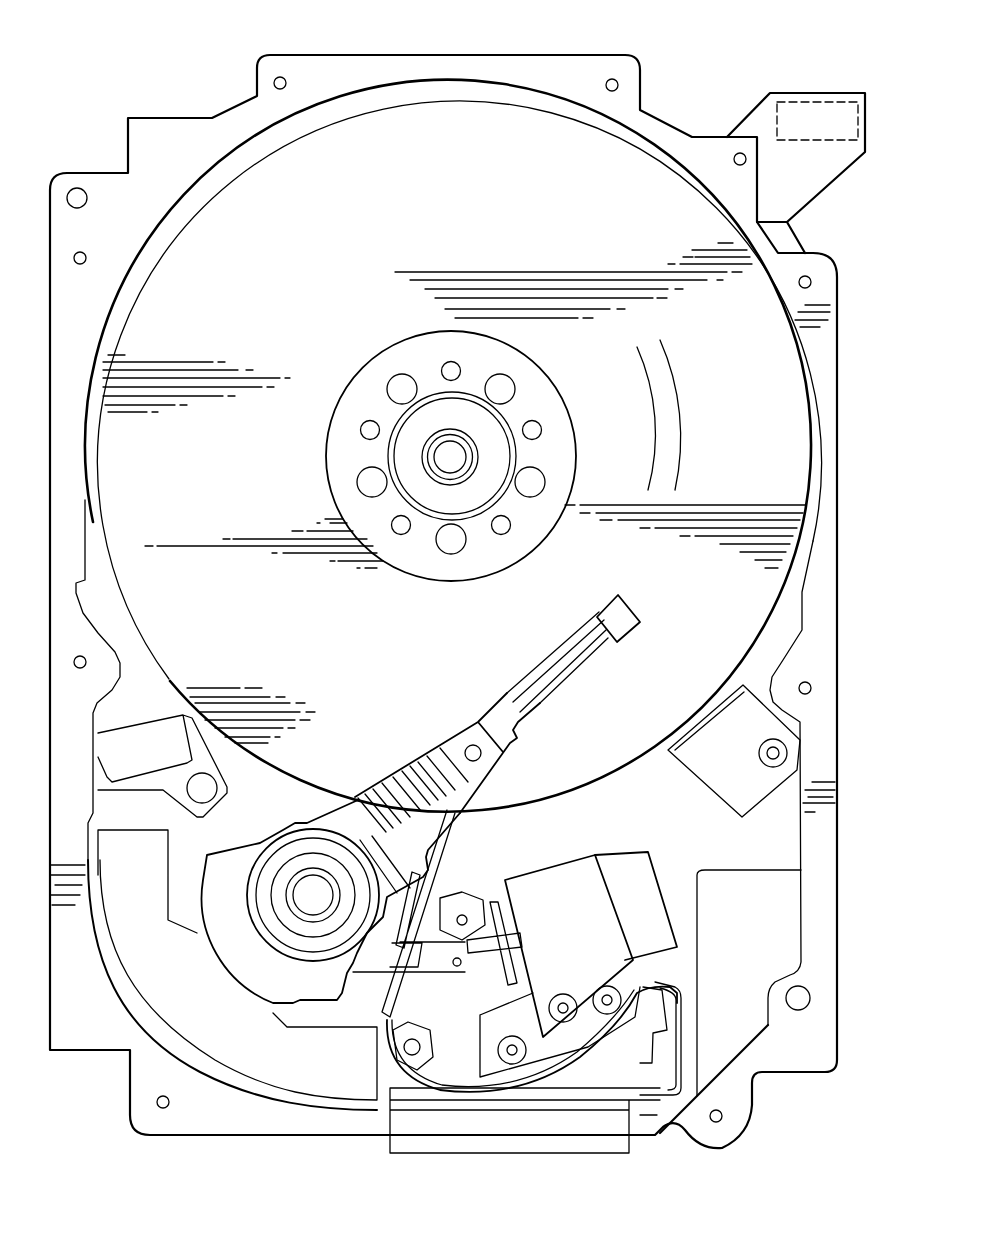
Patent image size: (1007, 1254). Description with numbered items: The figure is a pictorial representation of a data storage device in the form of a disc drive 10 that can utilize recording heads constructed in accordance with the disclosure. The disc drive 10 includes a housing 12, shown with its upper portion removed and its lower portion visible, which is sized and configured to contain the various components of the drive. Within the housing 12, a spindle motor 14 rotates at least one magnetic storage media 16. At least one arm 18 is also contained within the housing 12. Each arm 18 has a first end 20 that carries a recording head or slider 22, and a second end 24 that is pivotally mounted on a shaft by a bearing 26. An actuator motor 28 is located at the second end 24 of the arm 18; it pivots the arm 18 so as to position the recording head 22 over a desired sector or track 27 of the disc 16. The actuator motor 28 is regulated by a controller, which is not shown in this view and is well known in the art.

The disc drive 10 is at (108, 108).
The housing 12 is at (590, 65).
The spindle motor 14 is at (447, 462).
The magnetic storage media 16 is at (333, 238).
The arm 18 is at (435, 765).
The first end 20 is at (560, 648).
The recording head 22 is at (620, 615).
The second end 24 is at (342, 832).
The bearing 26 is at (307, 877).
The track 27 is at (690, 426).
The actuator motor 28 is at (175, 1020).